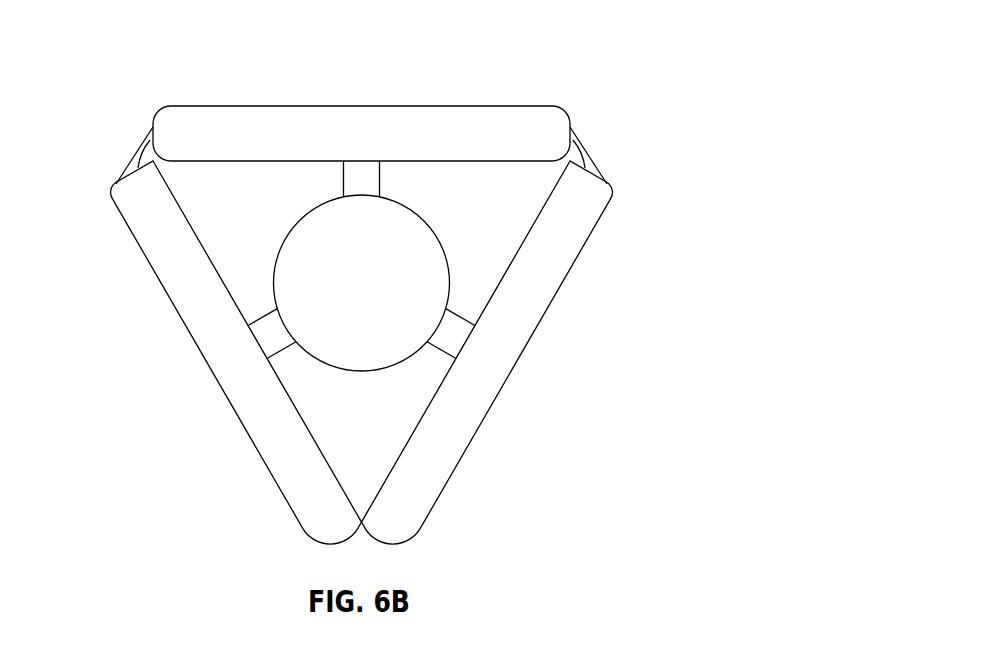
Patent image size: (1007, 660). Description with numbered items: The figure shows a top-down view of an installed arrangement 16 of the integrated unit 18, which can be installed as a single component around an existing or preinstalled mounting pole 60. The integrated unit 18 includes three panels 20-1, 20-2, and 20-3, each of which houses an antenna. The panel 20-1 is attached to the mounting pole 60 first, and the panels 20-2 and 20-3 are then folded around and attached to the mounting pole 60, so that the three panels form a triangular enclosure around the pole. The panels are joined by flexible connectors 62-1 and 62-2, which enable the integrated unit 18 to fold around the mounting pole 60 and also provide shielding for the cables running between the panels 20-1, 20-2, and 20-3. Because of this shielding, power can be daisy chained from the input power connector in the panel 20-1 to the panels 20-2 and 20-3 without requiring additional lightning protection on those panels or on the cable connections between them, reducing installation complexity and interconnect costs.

The tile / mounting assembly 16 is at (588, 47).
The integrated unit 18 is at (402, 106).
The panel 20-1 is at (238, 120).
The panel 20-2 is at (188, 302).
The panel 20-3 is at (530, 303).
The flexible connector 62-1 is at (147, 135).
The flexible connector 62-2 is at (576, 135).
The mounting pole 60 is at (308, 247).